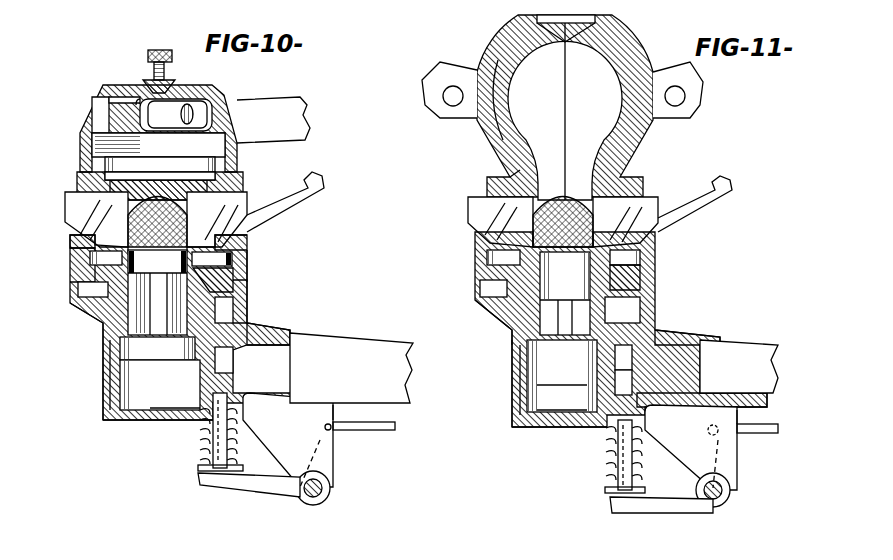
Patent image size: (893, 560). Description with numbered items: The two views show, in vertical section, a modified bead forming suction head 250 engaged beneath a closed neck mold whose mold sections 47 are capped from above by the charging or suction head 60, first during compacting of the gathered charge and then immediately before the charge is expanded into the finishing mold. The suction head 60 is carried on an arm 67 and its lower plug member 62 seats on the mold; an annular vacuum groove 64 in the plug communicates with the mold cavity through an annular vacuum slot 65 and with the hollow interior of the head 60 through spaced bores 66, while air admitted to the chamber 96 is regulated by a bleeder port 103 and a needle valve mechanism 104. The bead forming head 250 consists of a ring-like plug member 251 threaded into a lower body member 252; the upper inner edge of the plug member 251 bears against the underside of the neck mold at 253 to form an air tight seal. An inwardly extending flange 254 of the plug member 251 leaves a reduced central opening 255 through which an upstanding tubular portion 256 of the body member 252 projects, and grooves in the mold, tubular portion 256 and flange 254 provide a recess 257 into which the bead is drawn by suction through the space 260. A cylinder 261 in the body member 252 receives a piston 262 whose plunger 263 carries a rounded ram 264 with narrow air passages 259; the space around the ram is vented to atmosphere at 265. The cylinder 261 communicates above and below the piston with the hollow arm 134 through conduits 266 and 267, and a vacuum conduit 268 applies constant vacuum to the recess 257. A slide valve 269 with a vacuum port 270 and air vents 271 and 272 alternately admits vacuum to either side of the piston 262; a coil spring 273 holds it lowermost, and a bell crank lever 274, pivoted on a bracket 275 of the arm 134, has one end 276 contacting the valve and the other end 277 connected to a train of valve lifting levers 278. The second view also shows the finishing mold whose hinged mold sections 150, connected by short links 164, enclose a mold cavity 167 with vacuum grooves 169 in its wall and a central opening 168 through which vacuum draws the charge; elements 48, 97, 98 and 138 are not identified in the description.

In FIG. 10, the mold sections 47 is at (66, 209).
In FIG. 11, the mold sections 47 is at (660, 222).
In FIG. 10, the link arm 48 is at (322, 190).
In FIG. 11, the link arm 48 is at (732, 195).
In FIG. 10, the suction head 60 is at (82, 150).
In FIG. 10, the plug member 62 is at (148, 186).
In FIG. 10, the annular vacuum groove 64 is at (120, 185).
In FIG. 10, the annular vacuum slot 65 is at (205, 240).
In FIG. 10, the spaced bores 66 is at (77, 181).
In FIG. 10, the arm 67 is at (292, 100).
In FIG. 10, the chamber 96 is at (177, 114).
In FIG. 10, the pin 97 is at (195, 112).
In FIG. 10, the cover 98 is at (206, 96).
In FIG. 10, the bleeder port 103 is at (150, 80).
In FIG. 10, the needle valve mechanism 104 is at (158, 50).
In FIG. 10, the hollow arm 134 is at (333, 340).
In FIG. 11, the hollow arm 134 is at (764, 345).
In FIG. 11, the bracket body 138 is at (718, 376).
In FIG. 11, the mold sections 150 is at (505, 40).
In FIG. 11, the short links 164 is at (440, 68).
In FIG. 11, the mold cavity 167 is at (520, 125).
In FIG. 11, the central opening 168 is at (537, 19).
In FIG. 11, the vacuum grooves 169 is at (500, 128).
In FIG. 10, the bead forming head 250 is at (260, 289).
In FIG. 11, the bead forming head 250 is at (621, 329).
In FIG. 10, the plug member 251 is at (70, 265).
In FIG. 11, the plug member 251 is at (657, 262).
In FIG. 10, the lower body member 252 is at (248, 310).
In FIG. 11, the lower body member 252 is at (657, 310).
In FIG. 10, the air tight seal 253 is at (250, 243).
In FIG. 11, the air tight seal 253 is at (478, 243).
In FIG. 10, the annular flange 254 is at (248, 265).
In FIG. 11, the annular flange 254 is at (657, 280).
In FIG. 10, the reduced central opening 255 is at (233, 258).
In FIG. 10, the tubular portion 256 is at (236, 278).
In FIG. 10, the recess 257 is at (70, 244).
In FIG. 10, the air passages 259 is at (106, 258).
In FIG. 11, the air passages 259 is at (565, 293).
In FIG. 10, the space 260 is at (80, 293).
In FIG. 11, the space 260 is at (482, 288).
In FIG. 10, the cylinder 261 is at (108, 400).
In FIG. 11, the cylinder 261 is at (515, 380).
In FIG. 10, the piston 262 is at (112, 365).
In FIG. 11, the piston 262 is at (515, 400).
In FIG. 10, the plunger 263 is at (112, 343).
In FIG. 11, the plunger 263 is at (540, 355).
In FIG. 10, the ram 264 is at (157, 292).
In FIG. 11, the ram 264 is at (512, 343).
In FIG. 10, the vent 265 is at (100, 325).
In FIG. 11, the vent 265 is at (512, 325).
In FIG. 10, the conduit 266 is at (157, 348).
In FIG. 11, the conduit 266 is at (633, 362).
In FIG. 10, the conduit 267 is at (205, 395).
In FIG. 11, the conduit 267 is at (610, 390).
In FIG. 10, the vacuum conduit 268 is at (200, 376).
In FIG. 11, the vacuum conduit 268 is at (633, 382).
In FIG. 10, the slide valve 269 is at (245, 406).
In FIG. 11, the slide valve 269 is at (650, 450).
In FIG. 10, the vacuum port 270 is at (233, 352).
In FIG. 11, the vacuum port 270 is at (645, 400).
In FIG. 10, the air vent 271 is at (250, 330).
In FIG. 11, the air vent 271 is at (650, 348).
In FIG. 10, the air vent 272 is at (227, 380).
In FIG. 11, the air vent 272 is at (618, 448).
In FIG. 10, the coil spring 273 is at (200, 453).
In FIG. 11, the coil spring 273 is at (606, 464).
In FIG. 10, the bell crank lever 274 is at (332, 492).
In FIG. 11, the bell crank lever 274 is at (728, 500).
In FIG. 10, the bracket 275 is at (336, 410).
In FIG. 11, the bracket 275 is at (738, 475).
In FIG. 10, the lever end 276 is at (255, 492).
In FIG. 11, the lever end 276 is at (635, 506).
In FIG. 10, the lever end 277 is at (335, 434).
In FIG. 11, the lever end 277 is at (722, 445).
In FIG. 10, the train of valve lifting levers 278 is at (396, 428).
In FIG. 11, the train of valve lifting levers 278 is at (760, 428).